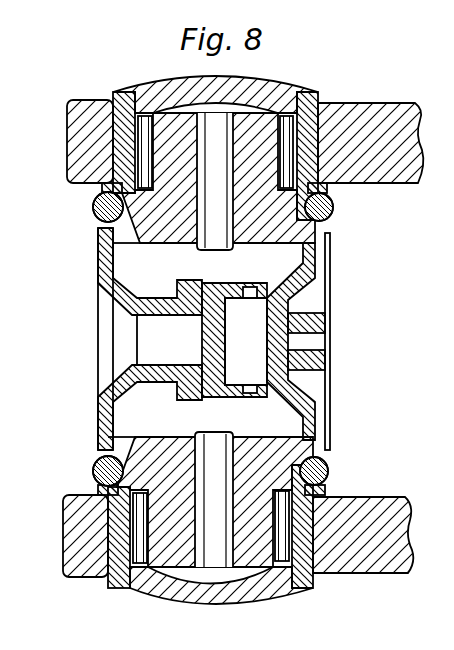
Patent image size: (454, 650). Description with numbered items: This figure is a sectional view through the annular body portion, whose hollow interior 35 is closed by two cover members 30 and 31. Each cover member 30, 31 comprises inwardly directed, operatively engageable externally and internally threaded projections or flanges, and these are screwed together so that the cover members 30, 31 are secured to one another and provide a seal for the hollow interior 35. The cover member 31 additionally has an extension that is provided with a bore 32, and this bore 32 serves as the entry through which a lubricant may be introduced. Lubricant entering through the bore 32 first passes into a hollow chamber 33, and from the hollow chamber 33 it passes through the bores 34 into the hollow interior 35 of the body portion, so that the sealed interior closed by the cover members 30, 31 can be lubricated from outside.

The cover member 30 is at (132, 296).
The cover member 31 is at (316, 266).
The bore 32 is at (318, 342).
The hollow chamber 33 is at (247, 357).
The bores 34 is at (248, 290).
The hollow interior 35 is at (132, 418).